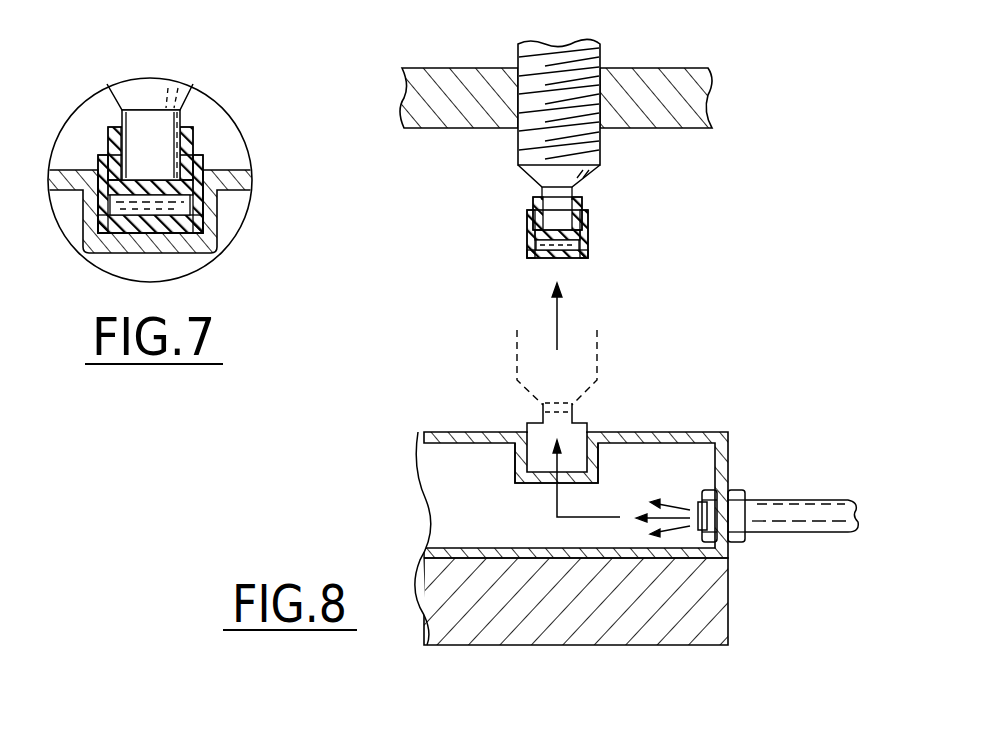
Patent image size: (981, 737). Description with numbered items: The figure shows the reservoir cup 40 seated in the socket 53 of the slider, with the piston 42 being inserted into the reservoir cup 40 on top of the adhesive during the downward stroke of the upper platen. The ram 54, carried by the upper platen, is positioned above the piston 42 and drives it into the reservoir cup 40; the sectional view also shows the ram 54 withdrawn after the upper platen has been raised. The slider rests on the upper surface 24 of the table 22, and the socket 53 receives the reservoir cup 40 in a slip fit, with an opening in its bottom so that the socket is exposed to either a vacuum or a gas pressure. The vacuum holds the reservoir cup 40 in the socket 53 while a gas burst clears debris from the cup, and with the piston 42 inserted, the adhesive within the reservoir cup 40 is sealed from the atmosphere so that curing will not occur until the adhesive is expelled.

In FIG. 8, the table 22 is at (636, 481).
In FIG. 8, the upper surface 24 is at (623, 437).
In FIG. 7, the reservoir cup 40 is at (203, 155).
In FIG. 8, the reservoir cup 40 is at (587, 243).
In FIG. 7, the piston 42 is at (193, 127).
In FIG. 8, the piston 42 is at (580, 200).
In FIG. 7, the socket 53 is at (217, 197).
In FIG. 8, the socket 53 is at (537, 427).
In FIG. 7, the ram 54 is at (182, 82).
In FIG. 8, the ram 54 is at (592, 60).